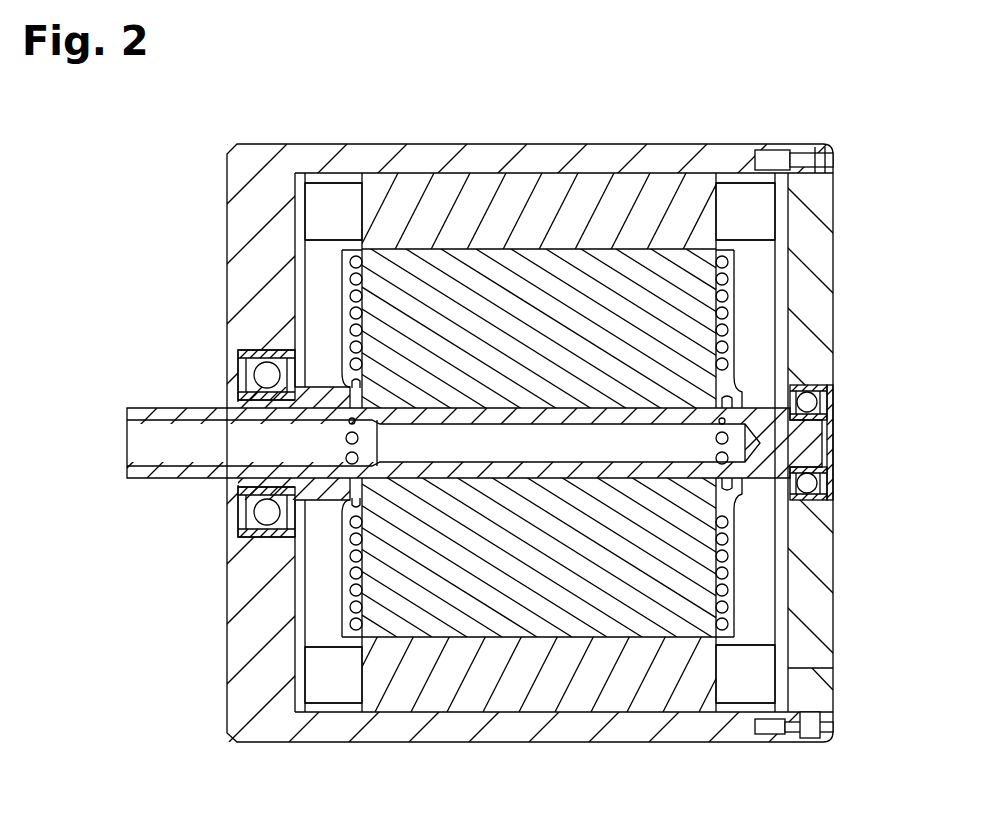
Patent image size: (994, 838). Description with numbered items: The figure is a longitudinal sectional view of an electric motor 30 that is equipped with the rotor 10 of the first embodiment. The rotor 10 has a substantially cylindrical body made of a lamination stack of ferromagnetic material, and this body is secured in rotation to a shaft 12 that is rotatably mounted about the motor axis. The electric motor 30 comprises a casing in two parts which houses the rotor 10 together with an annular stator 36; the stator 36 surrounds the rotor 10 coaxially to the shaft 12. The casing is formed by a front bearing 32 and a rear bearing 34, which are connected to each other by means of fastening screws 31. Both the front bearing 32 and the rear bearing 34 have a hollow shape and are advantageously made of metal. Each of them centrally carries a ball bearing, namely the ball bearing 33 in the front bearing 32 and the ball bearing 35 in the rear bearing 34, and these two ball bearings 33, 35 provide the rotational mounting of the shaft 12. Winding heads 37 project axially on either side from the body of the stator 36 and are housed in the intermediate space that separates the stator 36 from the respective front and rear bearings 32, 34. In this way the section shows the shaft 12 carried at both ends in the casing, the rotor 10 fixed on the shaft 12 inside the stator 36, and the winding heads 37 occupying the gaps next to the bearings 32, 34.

The electric motor 30 is at (137, 197).
The front bearing 32 is at (239, 630).
The rear bearing 34 is at (822, 268).
The fastening screws 31 is at (810, 160).
The stator 36 is at (562, 196).
The winding heads 37 is at (332, 186).
The rotor 10 is at (321, 275).
The shaft 12 is at (180, 478).
The ball bearing 33 is at (229, 363).
The ball bearing 35 is at (837, 379).